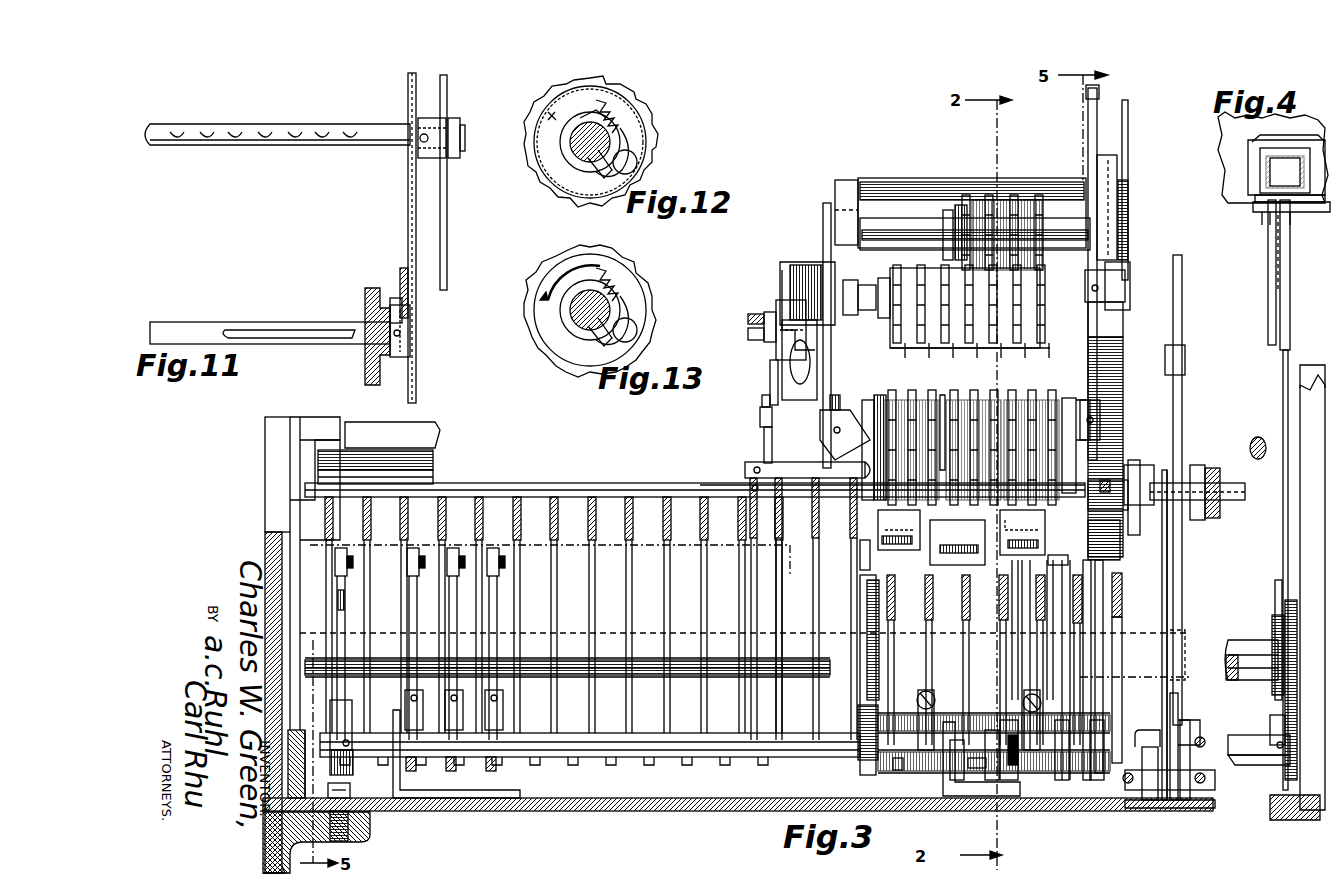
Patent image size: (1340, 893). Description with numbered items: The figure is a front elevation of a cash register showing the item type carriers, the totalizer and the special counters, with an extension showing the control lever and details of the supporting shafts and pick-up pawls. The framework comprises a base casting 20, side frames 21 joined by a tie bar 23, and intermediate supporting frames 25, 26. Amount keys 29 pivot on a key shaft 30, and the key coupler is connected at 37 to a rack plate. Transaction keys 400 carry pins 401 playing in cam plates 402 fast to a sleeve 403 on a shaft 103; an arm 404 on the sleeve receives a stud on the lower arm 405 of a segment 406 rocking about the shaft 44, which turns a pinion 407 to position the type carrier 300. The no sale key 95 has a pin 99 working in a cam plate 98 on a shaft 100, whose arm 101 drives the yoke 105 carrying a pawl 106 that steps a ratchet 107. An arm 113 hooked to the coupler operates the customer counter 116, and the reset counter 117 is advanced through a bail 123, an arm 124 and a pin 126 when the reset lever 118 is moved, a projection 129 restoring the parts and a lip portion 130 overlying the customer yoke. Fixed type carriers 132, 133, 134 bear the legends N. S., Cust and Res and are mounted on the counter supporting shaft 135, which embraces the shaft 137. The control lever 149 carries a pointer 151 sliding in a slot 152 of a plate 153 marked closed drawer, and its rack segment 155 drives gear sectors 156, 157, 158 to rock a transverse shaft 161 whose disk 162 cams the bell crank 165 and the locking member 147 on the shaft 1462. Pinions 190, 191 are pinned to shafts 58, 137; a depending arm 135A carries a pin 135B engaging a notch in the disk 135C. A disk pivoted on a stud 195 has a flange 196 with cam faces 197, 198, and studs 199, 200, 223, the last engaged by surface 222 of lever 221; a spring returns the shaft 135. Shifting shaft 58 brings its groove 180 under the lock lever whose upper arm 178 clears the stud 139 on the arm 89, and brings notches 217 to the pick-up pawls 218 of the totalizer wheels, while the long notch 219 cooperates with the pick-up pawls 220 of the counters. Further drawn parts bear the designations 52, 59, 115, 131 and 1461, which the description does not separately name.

In FIG. 3, the base casting 20 is at (606, 803).
In FIG. 3, the side frames 21 is at (268, 548).
In FIG. 3, the tie bar 23 is at (379, 453).
In FIG. 3, the intermediate supporting frame 25 is at (846, 180).
In FIG. 3, the intermediate supporting frame 26 is at (1102, 158).
In FIG. 3, the amount keys 29 is at (635, 485).
In FIG. 3, the key shaft 30 is at (603, 645).
In FIG. 3, the connection point 37 is at (945, 278).
In FIG. 3, the segment shaft 44 is at (1270, 443).
In FIG. 3, the drum shaft 52 is at (875, 220).
In FIG. 3, the totalizer shaft 58 is at (805, 265).
In FIG. 11, the totalizer shaft 58 is at (461, 136).
In FIG. 12, the totalizer shaft 58 is at (572, 148).
In FIG. 3, the type wheel row 59 is at (910, 322).
In FIG. 3, the arm 89 is at (1128, 124).
In FIG. 3, the no sale key 95 is at (318, 512).
In FIG. 3, the cam plate 98 is at (340, 548).
In FIG. 3, the pin 99 is at (348, 565).
In FIG. 3, the shaft 100 is at (380, 798).
In FIG. 3, the arm 101 is at (1062, 775).
In FIG. 3, the pin 103 is at (1120, 598).
In FIG. 3, the counter operating yoke 105 is at (1022, 532).
In FIG. 3, the pawl 106 is at (1022, 530).
In FIG. 13, the ratchet 107 is at (632, 266).
In FIG. 3, the arm 113 is at (1000, 780).
In FIG. 3, the rod 115 is at (1100, 557).
In FIG. 3, the customer counter 116 is at (980, 395).
In FIG. 3, the reset counter 117 is at (920, 395).
In FIG. 3, the reset lever 118 is at (1095, 112).
In FIG. 3, the bail 123 is at (898, 770).
In FIG. 3, the arm 124 is at (862, 735).
In FIG. 3, the pin 126 is at (862, 565).
In FIG. 3, the projection 129 is at (1167, 594).
In FIG. 3, the lip portion 130 is at (925, 496).
In FIG. 3, the plate 131 is at (940, 535).
In FIG. 3, the fixed type carrier 132 is at (1005, 400).
In FIG. 3, the fixed type carrier 133 is at (928, 420).
In FIG. 3, the fixed type carrier 134 is at (876, 400).
In FIG. 13, the counter supporting shaft 135 is at (572, 322).
In FIG. 3, the depending arm 135A is at (1072, 398).
In FIG. 11, the depending arm 135A is at (402, 268).
In FIG. 3, the pin 135B is at (1105, 435).
In FIG. 11, the pin 135B is at (396, 298).
In FIG. 3, the disk 135C is at (1105, 525).
In FIG. 11, the disk 135C is at (370, 305).
In FIG. 11, the shaft 137 is at (185, 322).
In FIG. 3, the stud 139 is at (1128, 208).
In FIG. 3, the locking member 147 is at (1180, 302).
In FIG. 3, the control lever 149 is at (1288, 285).
In FIG. 4, the pointer 151 is at (1268, 188).
In FIG. 4, the slot 152 is at (1262, 168).
In FIG. 4, the plate 153 is at (1288, 140).
In FIG. 3, the rack segment 155 is at (1275, 587).
In FIG. 3, the gear sector 156 is at (1274, 615).
In FIG. 3, the gear sector 157 is at (1285, 705).
In FIG. 3, the gear sector 158 is at (1272, 720).
In FIG. 3, the transverse shaft 161 is at (1140, 730).
In FIG. 3, the disk 162 is at (1178, 712).
In FIG. 3, the bell crank 165 is at (1170, 688).
In FIG. 11, the upper arm of lock lever 178 is at (447, 92).
In FIG. 3, the groove 180 is at (1112, 300).
In FIG. 11, the groove 180 is at (446, 125).
In FIG. 3, the pinion 190 is at (1095, 352).
In FIG. 11, the pinion 190 is at (408, 140).
In FIG. 3, the pinion 191 is at (1120, 450).
In FIG. 11, the pinion 191 is at (412, 326).
In FIG. 3, the stud 195 is at (770, 372).
In FIG. 3, the peripheral flange 196 is at (795, 330).
In FIG. 3, the cam face 197 is at (790, 300).
In FIG. 3, the cam face 198 is at (812, 440).
In FIG. 3, the stud 199 is at (748, 319).
In FIG. 3, the stud 200 is at (758, 340).
In FIG. 11, the notches 217 is at (350, 132).
In FIG. 12, the pick-up pawls 218 is at (640, 143).
In FIG. 11, the long notch 219 is at (283, 330).
In FIG. 13, the pick-up pawls 220 is at (630, 350).
In FIG. 3, the lever 221 is at (764, 437).
In FIG. 3, the surface 222 is at (760, 412).
In FIG. 3, the stud 223 is at (763, 400).
In FIG. 3, the type carrier 300 is at (965, 200).
In FIG. 3, the transaction keys 400 is at (478, 497).
In FIG. 3, the pin 401 is at (492, 560).
In FIG. 3, the cam plates 402 is at (490, 615).
In FIG. 3, the sleeve 403 is at (568, 745).
In FIG. 3, the arm 404 is at (925, 760).
In FIG. 3, the lower arm 405 is at (940, 590).
In FIG. 3, the segment 406 is at (948, 195).
In FIG. 3, the pinion 407 is at (945, 222).
In FIG. 3, the shaft 1461 is at (1230, 483).
In FIG. 3, the shaft 1462 is at (695, 483).